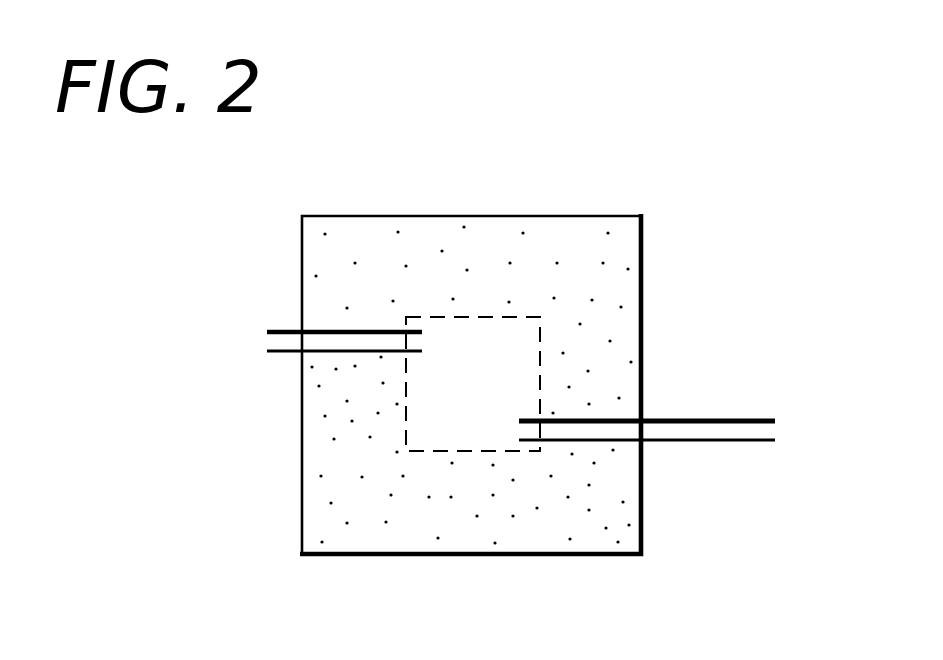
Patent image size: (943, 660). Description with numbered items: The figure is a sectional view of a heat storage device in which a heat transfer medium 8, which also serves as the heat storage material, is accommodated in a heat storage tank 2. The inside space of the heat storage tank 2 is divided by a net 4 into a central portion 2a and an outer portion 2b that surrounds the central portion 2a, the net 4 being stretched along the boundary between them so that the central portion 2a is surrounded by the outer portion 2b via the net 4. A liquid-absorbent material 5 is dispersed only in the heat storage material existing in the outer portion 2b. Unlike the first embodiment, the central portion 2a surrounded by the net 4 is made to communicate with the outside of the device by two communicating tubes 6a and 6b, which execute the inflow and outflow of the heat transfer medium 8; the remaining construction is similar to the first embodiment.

The heat storage tank 2 is at (641, 343).
The central portion 2a is at (482, 333).
The outer portion 2b is at (622, 495).
The net 4 is at (406, 393).
The liquid-absorbent material 5 is at (535, 525).
The communicating tube 6a is at (275, 331).
The communicating tube 6b is at (745, 421).
The heat transfer medium 8 is at (603, 259).